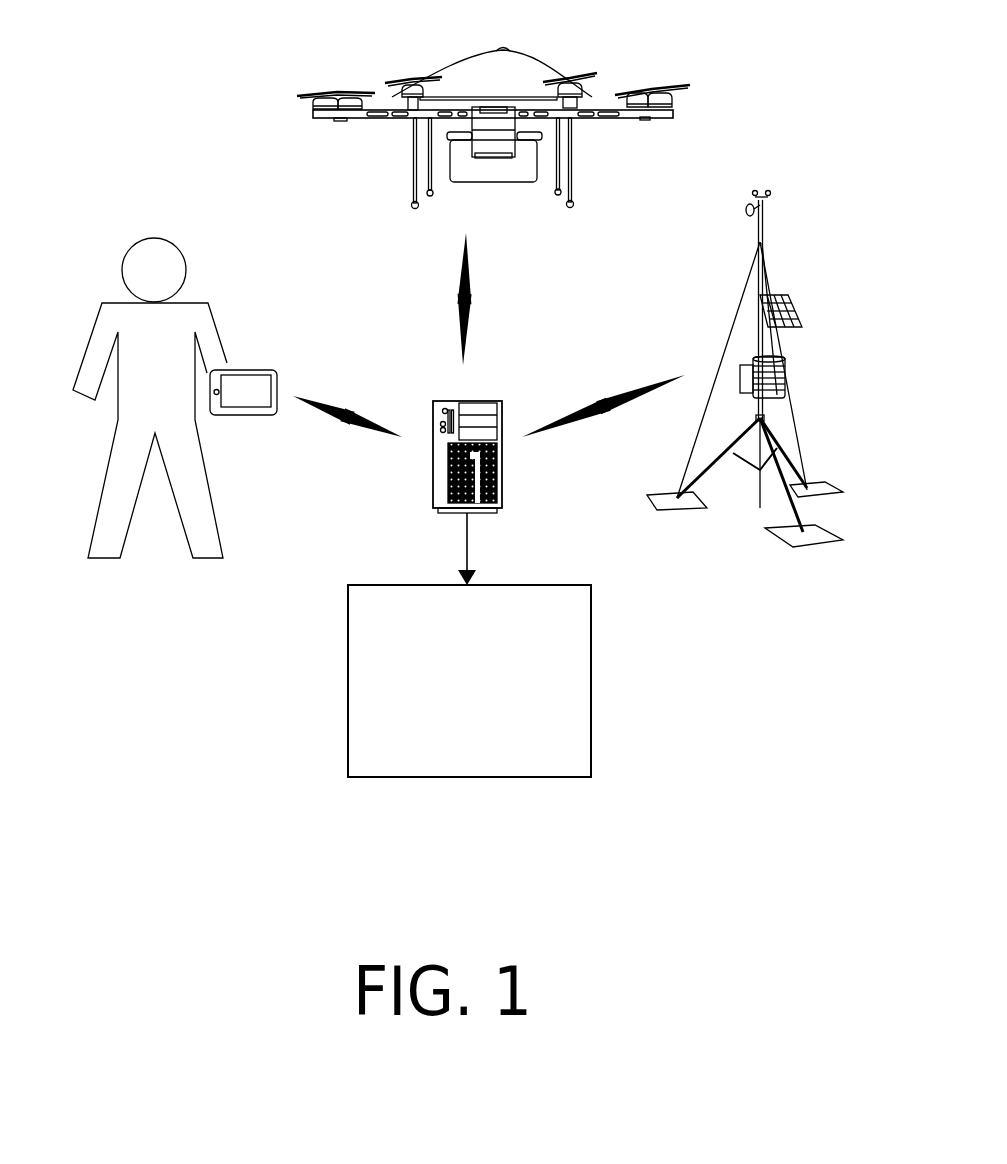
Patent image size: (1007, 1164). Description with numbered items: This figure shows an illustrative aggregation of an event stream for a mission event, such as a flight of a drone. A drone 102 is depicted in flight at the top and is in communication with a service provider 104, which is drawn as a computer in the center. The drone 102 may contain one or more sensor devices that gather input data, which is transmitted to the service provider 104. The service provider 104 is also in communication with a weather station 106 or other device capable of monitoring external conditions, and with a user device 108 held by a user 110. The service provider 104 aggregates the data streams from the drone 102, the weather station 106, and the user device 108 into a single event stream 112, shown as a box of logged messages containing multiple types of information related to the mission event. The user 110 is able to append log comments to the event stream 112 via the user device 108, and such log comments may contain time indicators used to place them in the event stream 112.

The drone 102 is at (497, 50).
The service provider 104 is at (497, 402).
The weather station 106 is at (792, 295).
The user device 108 is at (243, 370).
The user 110 is at (154, 237).
The event stream 112 is at (593, 672).